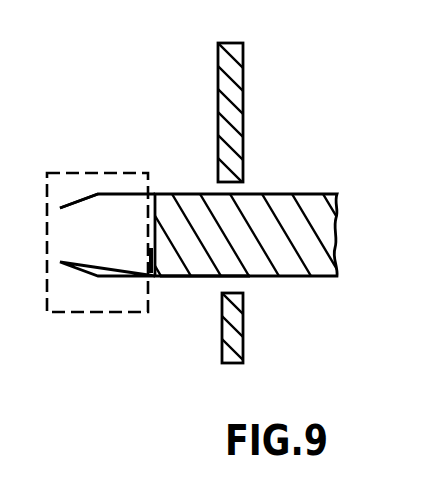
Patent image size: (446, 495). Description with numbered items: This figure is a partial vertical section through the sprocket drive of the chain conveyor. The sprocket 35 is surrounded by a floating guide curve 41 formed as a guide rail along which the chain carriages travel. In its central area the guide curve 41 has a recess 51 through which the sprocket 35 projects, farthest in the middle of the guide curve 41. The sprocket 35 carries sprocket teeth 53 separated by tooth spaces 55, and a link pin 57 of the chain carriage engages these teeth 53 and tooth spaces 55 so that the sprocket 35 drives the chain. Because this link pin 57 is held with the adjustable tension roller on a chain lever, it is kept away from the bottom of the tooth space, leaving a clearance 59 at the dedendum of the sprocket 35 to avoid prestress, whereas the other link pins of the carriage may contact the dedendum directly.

The sprocket 35 is at (314, 202).
The guide curve 41 is at (243, 97).
The recess 51 is at (204, 284).
The sprocket teeth 53 is at (98, 192).
The tooth spaces 55 is at (107, 235).
The link pin 57 is at (43, 191).
The clearance 59 is at (150, 283).